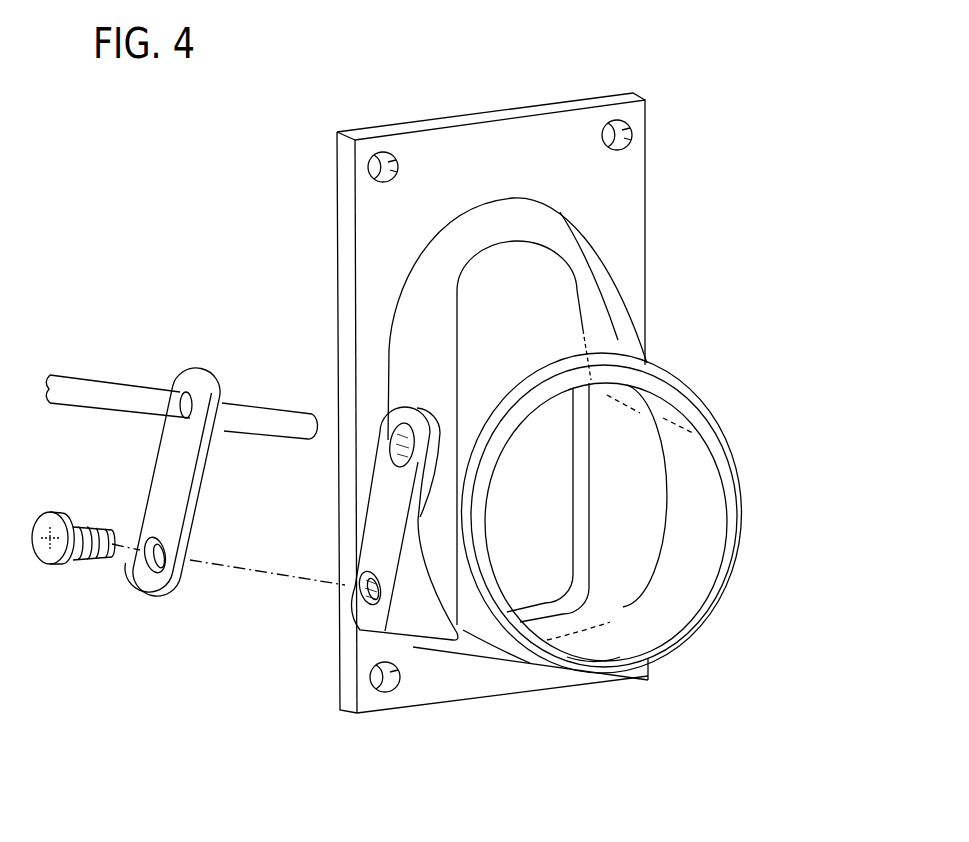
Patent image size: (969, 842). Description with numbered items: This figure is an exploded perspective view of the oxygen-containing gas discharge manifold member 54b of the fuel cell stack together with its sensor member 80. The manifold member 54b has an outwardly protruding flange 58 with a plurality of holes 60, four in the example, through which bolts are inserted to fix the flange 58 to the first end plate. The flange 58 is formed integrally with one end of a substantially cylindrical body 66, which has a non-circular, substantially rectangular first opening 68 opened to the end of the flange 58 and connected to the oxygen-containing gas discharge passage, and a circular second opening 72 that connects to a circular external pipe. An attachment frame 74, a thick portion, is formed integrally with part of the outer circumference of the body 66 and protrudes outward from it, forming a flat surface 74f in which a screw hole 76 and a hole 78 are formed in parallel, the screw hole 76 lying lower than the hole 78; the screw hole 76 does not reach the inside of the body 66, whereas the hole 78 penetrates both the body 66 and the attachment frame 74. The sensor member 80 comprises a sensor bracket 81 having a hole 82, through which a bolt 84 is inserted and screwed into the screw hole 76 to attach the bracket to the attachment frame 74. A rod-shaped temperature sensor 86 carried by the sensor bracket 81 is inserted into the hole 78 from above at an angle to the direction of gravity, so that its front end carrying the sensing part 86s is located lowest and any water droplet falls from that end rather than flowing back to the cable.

The oxygen-containing gas discharge manifold member 54b is at (233, 130).
The flange 58 is at (558, 130).
The holes 60 is at (632, 142).
The substantially cylindrical body 66 is at (557, 352).
The first opening 68 is at (585, 456).
The second opening 72 is at (674, 603).
The attachment frame 74 is at (412, 617).
The flat surface 74f is at (380, 525).
The screw hole 76 is at (357, 606).
The hole 78 is at (385, 443).
The sensor member 80 is at (173, 366).
The sensor bracket 81 is at (162, 468).
The hole 82 is at (150, 580).
The bolt 84 is at (48, 512).
The temperature sensor 86 is at (242, 405).
The sensing part 86s is at (312, 420).